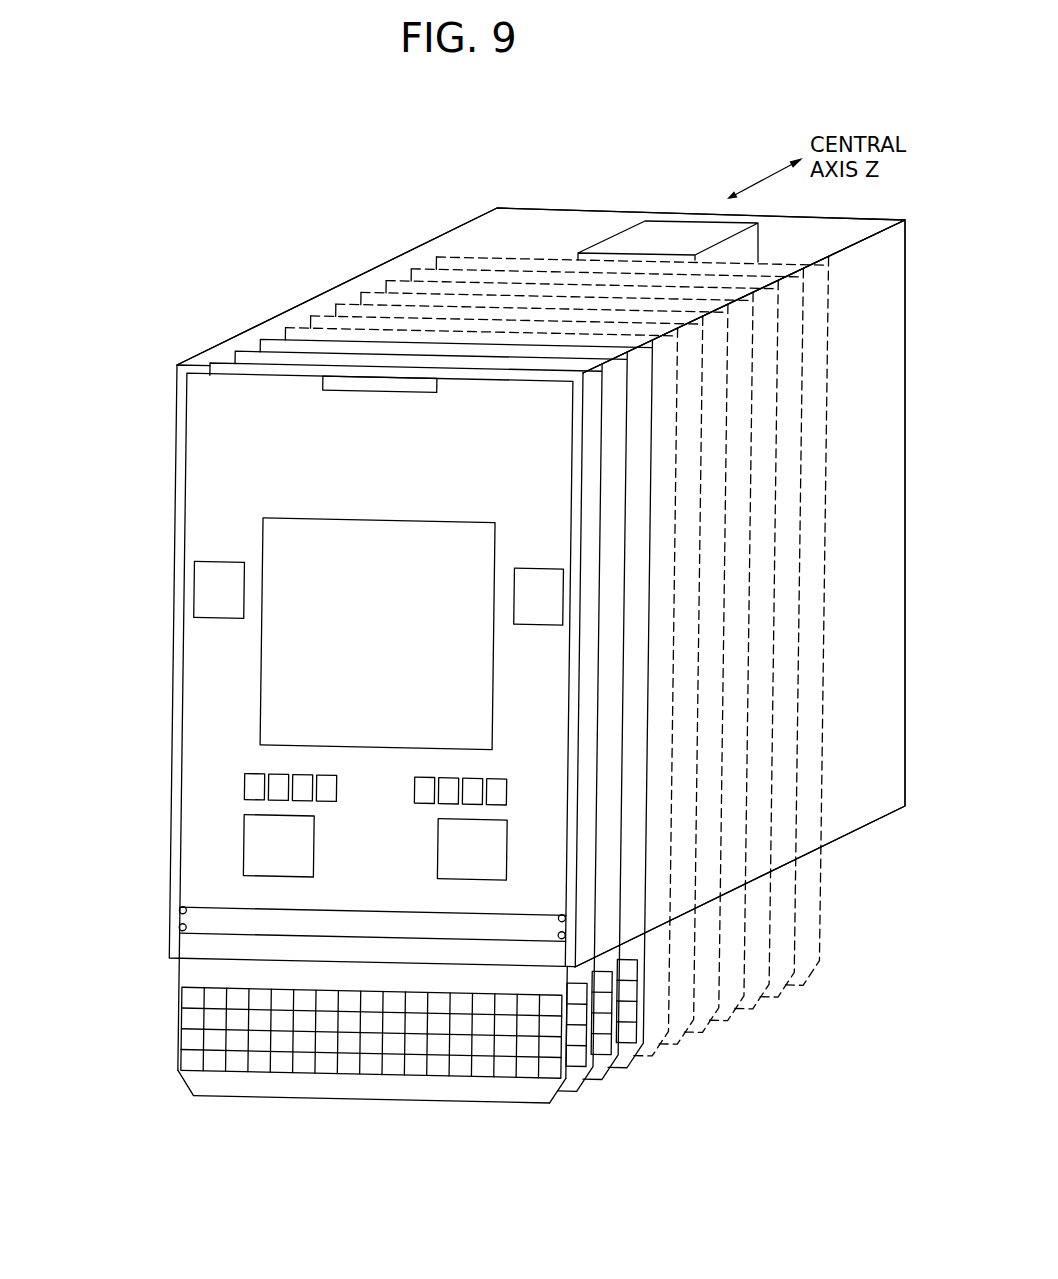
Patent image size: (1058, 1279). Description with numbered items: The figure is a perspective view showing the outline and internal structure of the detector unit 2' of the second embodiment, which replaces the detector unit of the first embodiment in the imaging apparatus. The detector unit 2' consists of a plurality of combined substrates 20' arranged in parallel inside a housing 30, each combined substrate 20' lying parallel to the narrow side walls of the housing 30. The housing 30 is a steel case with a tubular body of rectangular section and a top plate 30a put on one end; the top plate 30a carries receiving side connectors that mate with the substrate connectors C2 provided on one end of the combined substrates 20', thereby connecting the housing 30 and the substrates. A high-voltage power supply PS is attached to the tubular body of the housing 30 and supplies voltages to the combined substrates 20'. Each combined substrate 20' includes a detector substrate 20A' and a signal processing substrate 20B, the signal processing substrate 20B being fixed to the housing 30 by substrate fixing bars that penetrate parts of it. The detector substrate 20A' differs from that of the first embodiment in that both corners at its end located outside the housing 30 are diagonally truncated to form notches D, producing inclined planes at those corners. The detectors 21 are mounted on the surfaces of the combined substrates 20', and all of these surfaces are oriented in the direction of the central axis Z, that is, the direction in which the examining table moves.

The detector unit 2' is at (541, 520).
The housing 30 is at (176, 490).
The top plate 30a is at (458, 243).
The high-voltage power supply PS is at (666, 237).
The substrate connector C2 is at (381, 392).
The combined substrate 20' is at (311, 838).
The signal processing substrate 20B is at (176, 663).
The detector substrate 20A' is at (328, 1018).
The detector 21 is at (322, 1100).
The notch D is at (182, 1086).